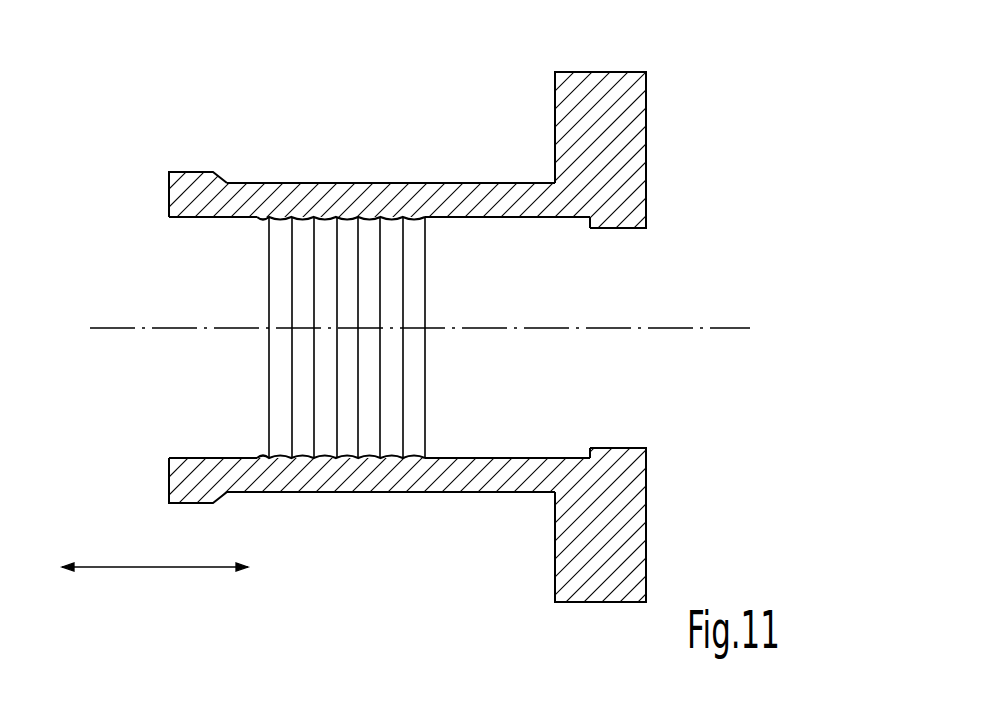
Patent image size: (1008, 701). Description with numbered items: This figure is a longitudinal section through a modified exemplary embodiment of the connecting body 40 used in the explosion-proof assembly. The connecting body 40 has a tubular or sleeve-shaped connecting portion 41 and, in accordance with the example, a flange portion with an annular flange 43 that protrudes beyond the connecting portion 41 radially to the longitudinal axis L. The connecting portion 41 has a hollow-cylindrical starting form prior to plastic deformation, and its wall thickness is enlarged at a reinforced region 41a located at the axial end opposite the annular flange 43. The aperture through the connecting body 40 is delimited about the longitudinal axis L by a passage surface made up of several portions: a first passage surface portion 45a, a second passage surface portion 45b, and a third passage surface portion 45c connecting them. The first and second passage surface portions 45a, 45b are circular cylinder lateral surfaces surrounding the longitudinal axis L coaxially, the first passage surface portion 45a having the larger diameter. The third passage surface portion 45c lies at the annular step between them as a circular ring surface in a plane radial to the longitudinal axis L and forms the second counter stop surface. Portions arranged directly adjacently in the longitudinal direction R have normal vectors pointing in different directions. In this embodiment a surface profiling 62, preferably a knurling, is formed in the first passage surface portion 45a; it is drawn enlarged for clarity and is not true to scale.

The connecting body 40 is at (772, 158).
The connecting portion 41 is at (438, 180).
The reinforced region 41a is at (188, 172).
The annular flange 43 is at (623, 88).
The first passage surface portion 45a is at (256, 217).
The second passage surface portion 45b is at (631, 229).
The third passage surface portion 45c is at (588, 455).
The surface profiling 62 is at (390, 243).
The longitudinal axis L is at (708, 328).
The longitudinal direction R is at (148, 567).